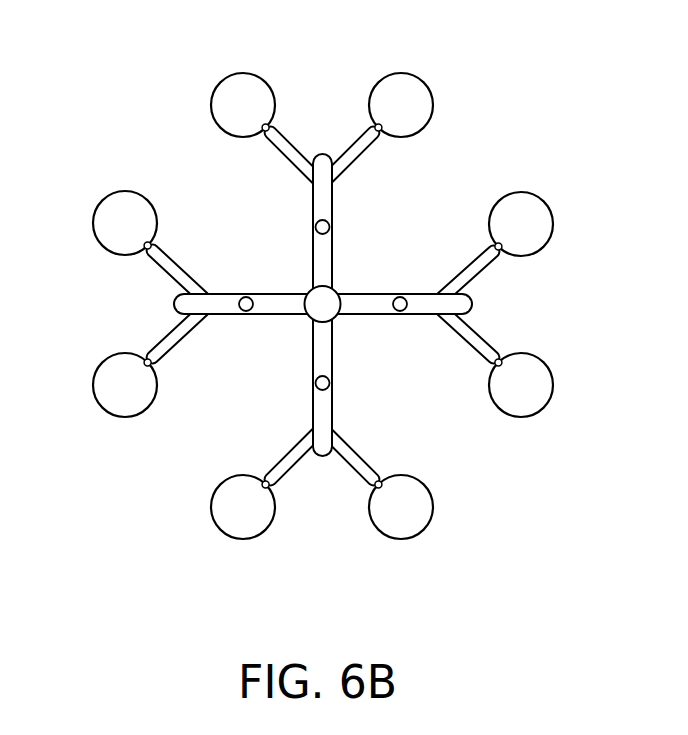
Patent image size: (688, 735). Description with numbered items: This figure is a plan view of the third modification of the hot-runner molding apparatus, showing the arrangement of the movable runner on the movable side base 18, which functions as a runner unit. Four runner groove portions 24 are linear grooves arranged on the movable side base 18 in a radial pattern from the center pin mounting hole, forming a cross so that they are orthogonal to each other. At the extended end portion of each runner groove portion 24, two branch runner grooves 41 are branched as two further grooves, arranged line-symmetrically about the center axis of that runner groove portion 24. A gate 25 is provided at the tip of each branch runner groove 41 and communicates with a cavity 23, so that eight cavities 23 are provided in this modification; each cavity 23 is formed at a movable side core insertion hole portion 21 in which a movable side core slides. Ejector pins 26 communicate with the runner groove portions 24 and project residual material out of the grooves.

The movable side base 18 is at (323, 306).
The movable side core insertion hole portion 21 is at (212, 97).
The cavity 23 is at (247, 88).
The runner groove portion 24 is at (312, 213).
The gate 25 is at (275, 124).
The ejector pin 26 is at (316, 230).
The branch runner groove 41 is at (287, 161).